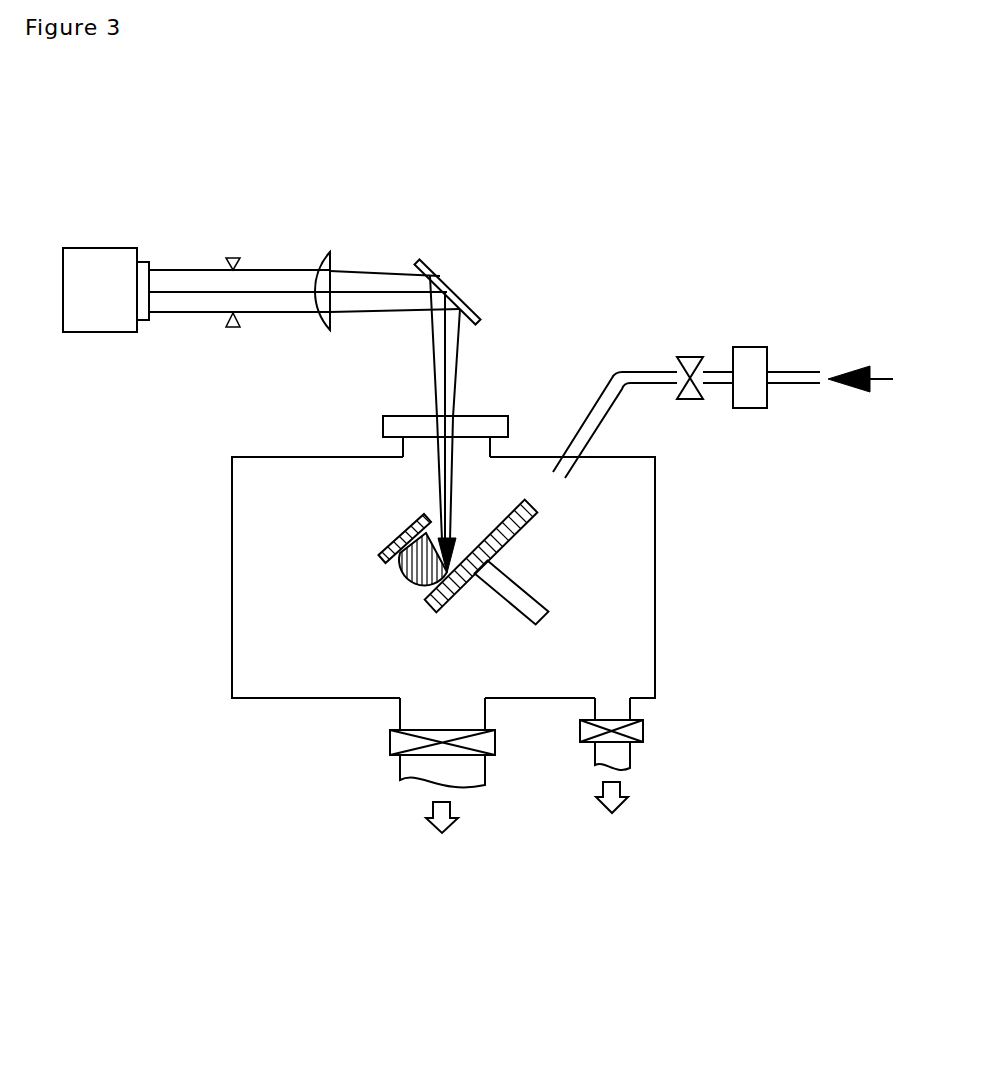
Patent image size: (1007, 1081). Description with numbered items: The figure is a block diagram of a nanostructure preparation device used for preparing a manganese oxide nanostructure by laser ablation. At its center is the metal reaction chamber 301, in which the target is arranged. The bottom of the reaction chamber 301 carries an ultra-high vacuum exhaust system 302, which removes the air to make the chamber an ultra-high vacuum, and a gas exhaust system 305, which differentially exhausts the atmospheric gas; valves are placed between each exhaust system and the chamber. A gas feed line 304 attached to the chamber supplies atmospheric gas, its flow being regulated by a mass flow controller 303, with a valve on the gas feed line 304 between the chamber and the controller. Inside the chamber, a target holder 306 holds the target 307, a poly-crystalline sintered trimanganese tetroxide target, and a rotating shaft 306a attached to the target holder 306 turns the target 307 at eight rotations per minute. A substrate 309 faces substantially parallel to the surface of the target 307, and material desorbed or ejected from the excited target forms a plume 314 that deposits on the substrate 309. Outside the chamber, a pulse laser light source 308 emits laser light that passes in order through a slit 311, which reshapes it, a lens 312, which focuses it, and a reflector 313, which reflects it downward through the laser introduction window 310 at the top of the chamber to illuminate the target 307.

The reaction chamber 301 is at (246, 470).
The ultra-high vacuum exhaust system 302 is at (440, 823).
The mass flow controller 303 is at (751, 365).
The gas feed line 304 is at (640, 377).
The gas exhaust system 305 is at (612, 805).
The target holder 306 is at (536, 512).
The rotating shaft 306a is at (545, 612).
The target 307 is at (512, 538).
The pulse laser light source 308 is at (107, 320).
The substrate 309 is at (385, 558).
The laser introduction window 310 is at (495, 428).
The slit 311 is at (233, 258).
The lens 312 is at (330, 258).
The reflector 313 is at (441, 280).
The plume 314 is at (413, 570).